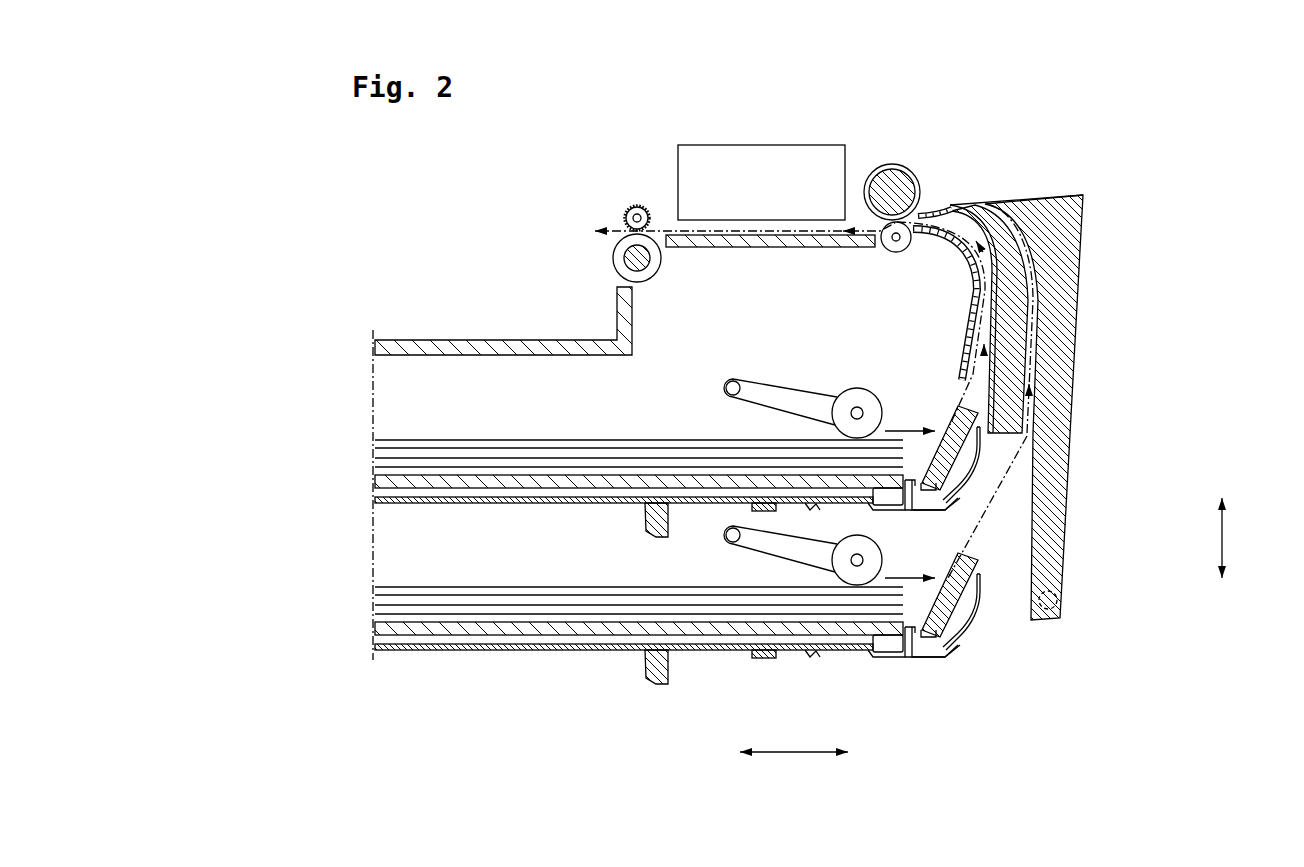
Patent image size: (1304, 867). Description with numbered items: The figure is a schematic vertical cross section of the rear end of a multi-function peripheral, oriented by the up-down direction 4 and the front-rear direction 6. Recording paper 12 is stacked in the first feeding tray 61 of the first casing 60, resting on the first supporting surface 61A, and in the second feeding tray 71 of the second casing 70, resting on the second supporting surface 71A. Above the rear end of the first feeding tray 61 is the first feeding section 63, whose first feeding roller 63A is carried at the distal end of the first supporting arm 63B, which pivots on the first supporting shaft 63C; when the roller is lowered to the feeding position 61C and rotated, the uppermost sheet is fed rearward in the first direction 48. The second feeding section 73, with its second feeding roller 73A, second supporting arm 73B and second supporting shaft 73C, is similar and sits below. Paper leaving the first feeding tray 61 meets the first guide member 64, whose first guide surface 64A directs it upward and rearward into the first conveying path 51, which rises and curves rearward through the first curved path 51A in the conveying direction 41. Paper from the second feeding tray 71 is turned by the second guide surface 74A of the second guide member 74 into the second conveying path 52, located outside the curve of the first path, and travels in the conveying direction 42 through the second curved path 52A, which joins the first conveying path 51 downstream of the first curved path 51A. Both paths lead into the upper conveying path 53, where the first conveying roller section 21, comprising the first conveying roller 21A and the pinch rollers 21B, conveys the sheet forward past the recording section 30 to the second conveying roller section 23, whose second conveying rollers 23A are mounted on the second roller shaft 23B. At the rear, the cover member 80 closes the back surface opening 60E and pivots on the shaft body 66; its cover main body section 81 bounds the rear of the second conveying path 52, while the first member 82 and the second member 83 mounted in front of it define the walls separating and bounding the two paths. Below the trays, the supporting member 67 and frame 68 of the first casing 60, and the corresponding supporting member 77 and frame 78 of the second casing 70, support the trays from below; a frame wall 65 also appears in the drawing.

The up-down direction 4 is at (1235, 540).
The front-rear direction 6 is at (790, 757).
The recording paper 12 is at (517, 437).
The first conveying roller section 21 is at (932, 182).
The first conveying roller 21A is at (888, 165).
The pinch roller 21B is at (893, 252).
The second conveying roller section 23 is at (608, 220).
The second conveying roller 23A is at (613, 257).
The second roller shaft 23B is at (637, 205).
The recording section 30 is at (757, 145).
The conveying direction 41 is at (862, 248).
The conveying direction 42 is at (1042, 408).
The first direction 48 is at (893, 425).
The first conveying path 51 is at (982, 303).
The first curved path 51A is at (957, 242).
The second conveying path 52 is at (1040, 330).
The second curved path 52A is at (1004, 228).
The upper conveying path 53 is at (667, 228).
The first casing 60 is at (370, 463).
The back surface opening 60E is at (1010, 500).
The first feeding tray 61 is at (605, 436).
The first supporting surface 61A is at (412, 482).
The feeding position 61C is at (848, 466).
The first feeding section 63 is at (718, 405).
The first feeding roller 63A is at (857, 388).
The first supporting arm 63B is at (767, 407).
The first supporting shaft 63C is at (724, 390).
The first guide member 64 is at (963, 420).
The first guide surface 64A is at (955, 418).
The frame wall 65 is at (488, 339).
The shaft body 66 is at (1048, 610).
The supporting member 67 is at (992, 459).
The frame 68 is at (925, 508).
The second casing 70 is at (653, 617).
The second feeding tray 71 is at (666, 614).
The second supporting surface 71A is at (639, 663).
The second feeding section 73 is at (761, 550).
The second feeding roller 73A is at (839, 550).
The second supporting arm 73B is at (762, 557).
The second supporting shaft 73C is at (709, 527).
The second guide member 74 is at (967, 576).
The second guide surface 74A is at (932, 595).
The supporting member 77 is at (1006, 644).
The frame 78 is at (926, 692).
The cover member 80 is at (1087, 185).
The cover main body section 81 is at (1045, 210).
The first member 82 is at (1007, 283).
The second member 83 is at (967, 331).